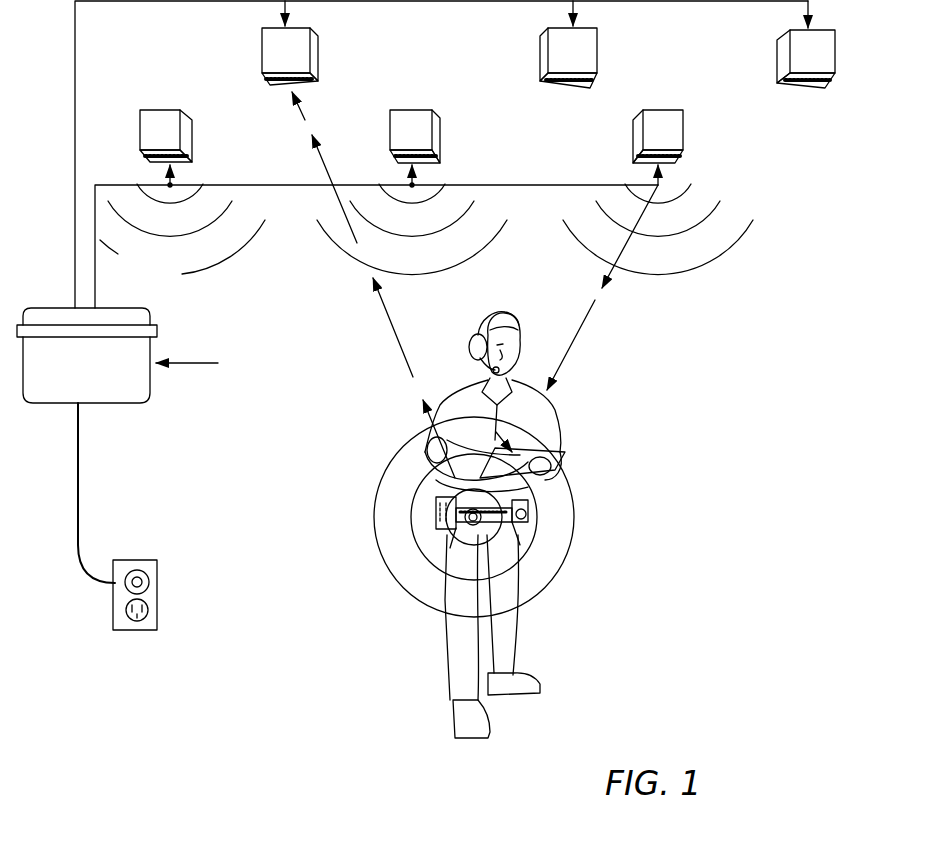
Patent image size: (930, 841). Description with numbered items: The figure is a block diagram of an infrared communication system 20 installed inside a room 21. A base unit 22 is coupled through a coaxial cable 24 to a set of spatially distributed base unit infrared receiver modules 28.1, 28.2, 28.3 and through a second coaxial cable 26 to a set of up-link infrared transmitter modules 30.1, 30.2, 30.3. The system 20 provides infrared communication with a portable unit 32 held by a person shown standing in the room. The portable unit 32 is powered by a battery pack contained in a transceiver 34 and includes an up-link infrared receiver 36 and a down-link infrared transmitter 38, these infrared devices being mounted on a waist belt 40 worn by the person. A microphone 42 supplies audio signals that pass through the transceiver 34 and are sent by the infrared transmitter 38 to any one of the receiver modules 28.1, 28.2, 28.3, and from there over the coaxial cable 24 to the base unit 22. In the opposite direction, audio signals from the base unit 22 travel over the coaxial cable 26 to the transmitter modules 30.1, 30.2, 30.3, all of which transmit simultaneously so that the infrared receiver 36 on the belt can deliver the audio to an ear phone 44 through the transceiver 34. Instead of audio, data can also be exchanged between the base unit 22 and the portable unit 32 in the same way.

The infrared communication system 20 is at (627, 347).
The room 21 is at (673, 455).
The base unit 22 is at (143, 403).
The coaxial cable 24 is at (75, 98).
The coaxial cable 26 is at (292, 188).
The base unit infrared receiver module 28.1 is at (318, 66).
The base unit infrared receiver module 28.2 is at (540, 66).
The base unit infrared receiver module 28.3 is at (777, 62).
The up-link infrared transmitter module 30.1 is at (192, 137).
The up-link infrared transmitter module 30.2 is at (440, 130).
The up-link infrared transmitter module 30.3 is at (683, 132).
The portable unit 32 is at (548, 508).
The transceiver 34 is at (432, 530).
The up-link infrared receiver 36 is at (525, 520).
The down-link infrared transmitter 38 is at (448, 548).
The waist belt 40 is at (525, 555).
The microphone 42 is at (485, 368).
The ear phone 44 is at (478, 342).